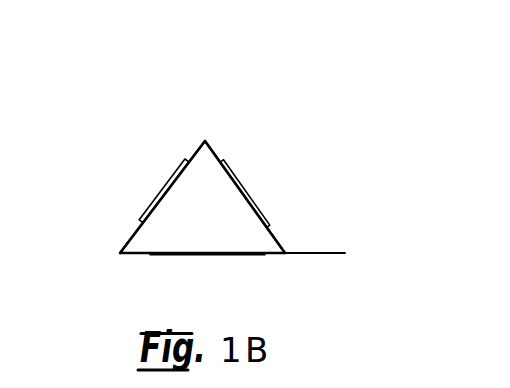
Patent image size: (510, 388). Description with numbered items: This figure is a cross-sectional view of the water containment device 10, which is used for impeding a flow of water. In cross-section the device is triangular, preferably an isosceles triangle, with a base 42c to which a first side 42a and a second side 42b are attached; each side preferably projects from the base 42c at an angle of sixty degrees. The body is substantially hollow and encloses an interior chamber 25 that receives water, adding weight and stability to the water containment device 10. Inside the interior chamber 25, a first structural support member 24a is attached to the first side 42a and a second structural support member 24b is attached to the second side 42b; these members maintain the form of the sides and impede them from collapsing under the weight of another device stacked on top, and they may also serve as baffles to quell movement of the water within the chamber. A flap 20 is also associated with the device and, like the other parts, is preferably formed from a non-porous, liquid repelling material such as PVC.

The water containment device 10 is at (213, 109).
The flap 20 is at (314, 254).
The first structural support member 24a is at (186, 162).
The second structural support member 24b is at (223, 162).
The interior chamber 25 is at (219, 228).
The first side 42a is at (165, 193).
The second side 42b is at (258, 208).
The base 42c is at (233, 254).